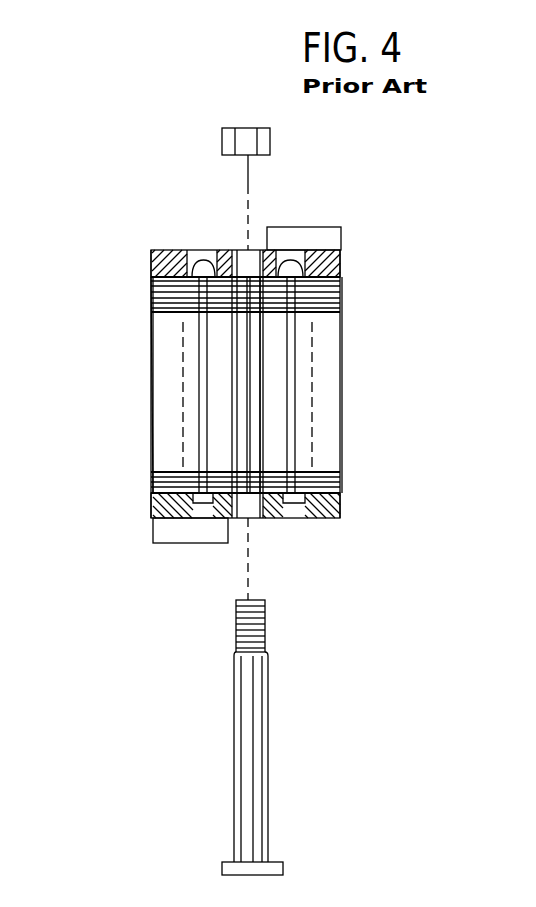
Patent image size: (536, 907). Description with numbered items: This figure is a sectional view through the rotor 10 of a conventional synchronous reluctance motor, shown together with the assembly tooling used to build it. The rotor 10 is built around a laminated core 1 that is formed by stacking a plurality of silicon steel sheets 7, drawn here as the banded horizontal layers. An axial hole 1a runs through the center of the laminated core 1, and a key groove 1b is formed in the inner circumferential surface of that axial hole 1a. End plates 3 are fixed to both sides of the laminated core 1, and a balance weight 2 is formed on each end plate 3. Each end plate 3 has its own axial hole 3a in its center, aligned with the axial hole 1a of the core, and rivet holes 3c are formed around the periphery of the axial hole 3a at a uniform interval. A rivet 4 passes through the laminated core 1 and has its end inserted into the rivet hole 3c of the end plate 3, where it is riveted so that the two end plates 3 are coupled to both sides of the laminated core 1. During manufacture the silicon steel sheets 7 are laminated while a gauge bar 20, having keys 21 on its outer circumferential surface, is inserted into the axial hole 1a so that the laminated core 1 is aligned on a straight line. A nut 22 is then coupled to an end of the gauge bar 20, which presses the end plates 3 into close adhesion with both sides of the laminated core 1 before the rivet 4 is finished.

The laminated core 1 is at (350, 328).
The axial hole 1a is at (257, 369).
The key groove 1b is at (245, 343).
The balance weight 2 is at (341, 236).
The end plate 3 is at (343, 262).
The axial hole 3a is at (237, 250).
The rivet hole 3c is at (203, 512).
The rivet 4 is at (293, 406).
The silicon steel sheet 7 is at (343, 292).
The rotor 10 is at (140, 295).
The gauge bar 20 is at (270, 725).
The key 21 is at (270, 800).
The nut 22 is at (263, 142).